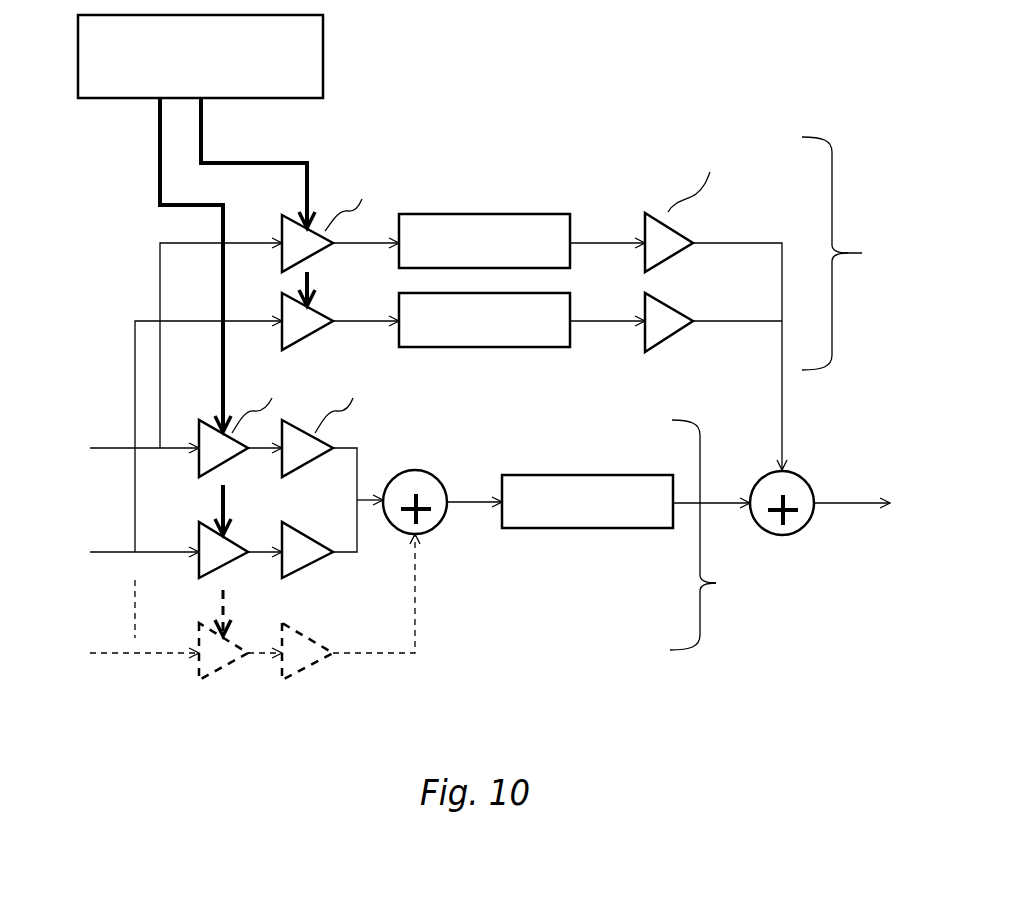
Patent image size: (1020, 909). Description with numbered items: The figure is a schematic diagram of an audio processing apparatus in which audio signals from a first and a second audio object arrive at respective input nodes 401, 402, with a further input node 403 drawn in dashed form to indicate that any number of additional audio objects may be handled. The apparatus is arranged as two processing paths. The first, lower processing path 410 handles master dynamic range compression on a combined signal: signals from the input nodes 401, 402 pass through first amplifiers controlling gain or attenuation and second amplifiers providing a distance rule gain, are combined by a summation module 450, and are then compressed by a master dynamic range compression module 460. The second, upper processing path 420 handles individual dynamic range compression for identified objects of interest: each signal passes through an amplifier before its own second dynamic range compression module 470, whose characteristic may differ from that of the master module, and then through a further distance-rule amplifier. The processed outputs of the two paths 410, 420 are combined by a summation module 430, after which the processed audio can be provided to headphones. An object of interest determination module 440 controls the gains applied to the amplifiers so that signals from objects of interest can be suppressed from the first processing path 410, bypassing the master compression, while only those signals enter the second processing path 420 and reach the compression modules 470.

The object of interest determination module 440 is at (323, 45).
The second dynamic range compression module 470 is at (490, 213).
The second processing path 420 is at (529, 341).
The summation module 430 is at (806, 474).
The summation module 450 is at (422, 468).
The master dynamic range compression module 460 is at (590, 475).
The first processing path 410 is at (395, 522).
The input node 401 is at (107, 441).
The input node 402 is at (107, 536).
The further object input 403 is at (107, 619).